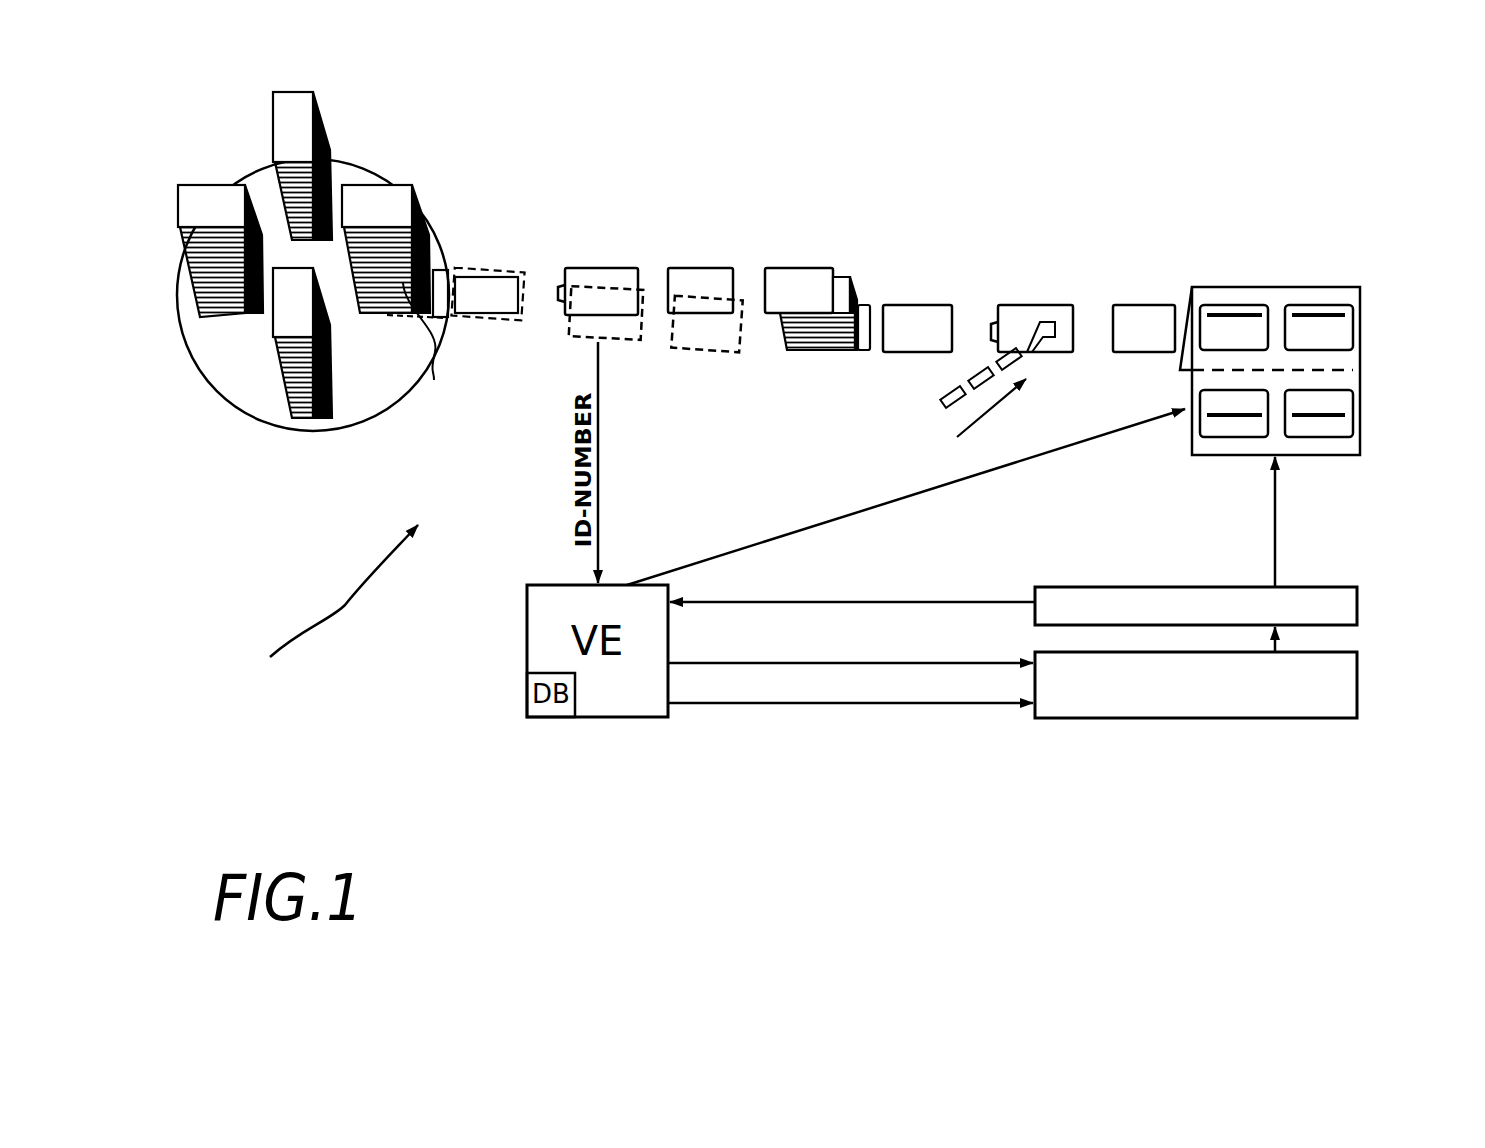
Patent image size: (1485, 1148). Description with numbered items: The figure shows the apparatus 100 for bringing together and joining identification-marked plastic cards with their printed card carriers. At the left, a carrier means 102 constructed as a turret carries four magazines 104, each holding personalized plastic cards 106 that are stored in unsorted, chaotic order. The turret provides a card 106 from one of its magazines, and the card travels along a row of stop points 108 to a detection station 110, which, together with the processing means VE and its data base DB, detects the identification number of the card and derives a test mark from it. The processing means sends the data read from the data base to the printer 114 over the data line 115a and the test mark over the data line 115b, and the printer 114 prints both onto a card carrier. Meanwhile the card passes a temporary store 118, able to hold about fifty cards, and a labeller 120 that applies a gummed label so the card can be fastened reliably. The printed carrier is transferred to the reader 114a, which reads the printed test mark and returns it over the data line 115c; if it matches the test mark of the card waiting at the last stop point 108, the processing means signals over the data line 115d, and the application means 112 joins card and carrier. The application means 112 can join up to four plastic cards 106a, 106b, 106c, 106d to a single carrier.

The apparatus 100 is at (301, 617).
The carrier means 102 is at (360, 162).
The magazine 104 is at (295, 147).
The plastic card 106 is at (437, 270).
The plastic card 106a is at (1232, 317).
The plastic card 106b is at (1325, 333).
The plastic card 106c is at (1235, 427).
The plastic card 106d is at (1333, 430).
The stop point 108 is at (610, 280).
The detection station 110 is at (705, 287).
The application means 112 is at (1313, 295).
The printer 114 is at (1317, 718).
The reader 114a is at (1353, 605).
The data line 115a is at (827, 663).
The data line 115b is at (882, 708).
The data line 115c is at (892, 602).
The data line 115d is at (1120, 432).
The temporary store 118 is at (838, 262).
The labeller 120 is at (1028, 317).